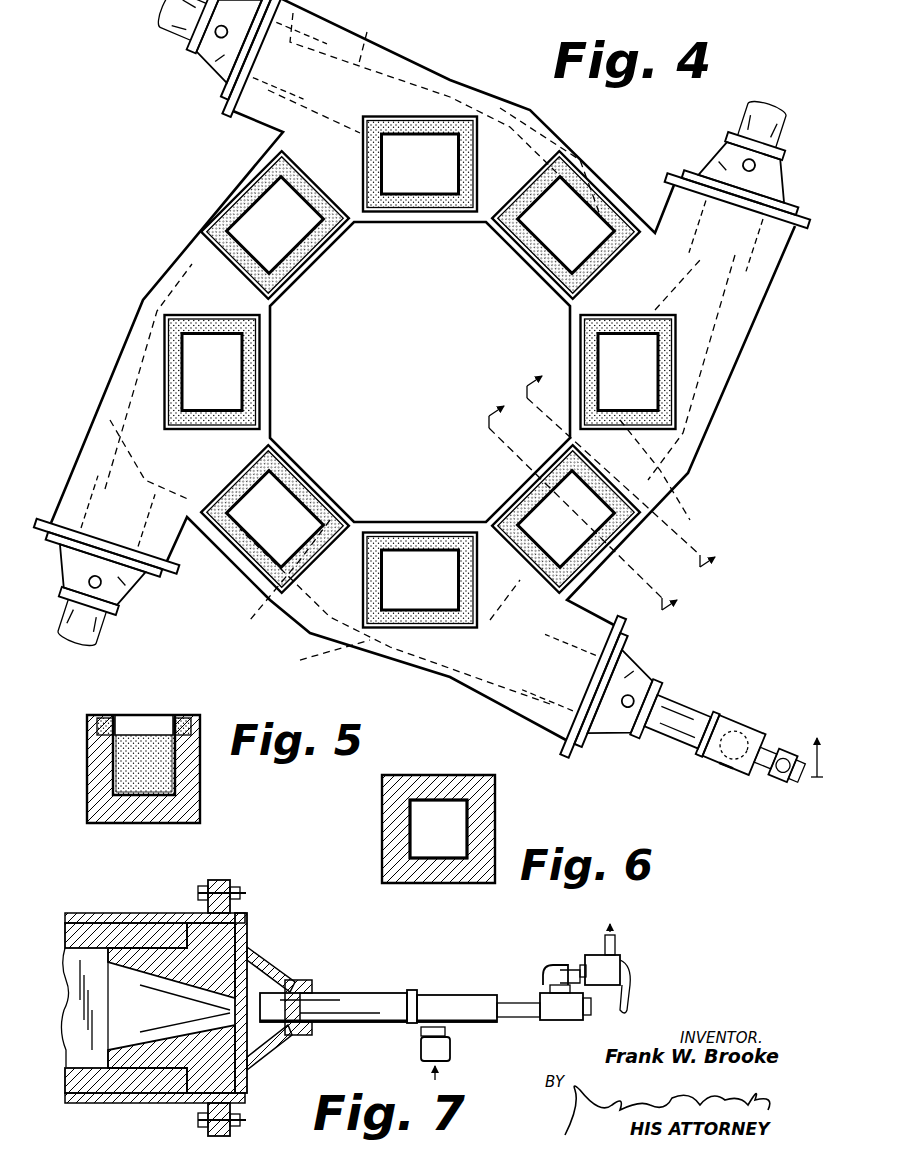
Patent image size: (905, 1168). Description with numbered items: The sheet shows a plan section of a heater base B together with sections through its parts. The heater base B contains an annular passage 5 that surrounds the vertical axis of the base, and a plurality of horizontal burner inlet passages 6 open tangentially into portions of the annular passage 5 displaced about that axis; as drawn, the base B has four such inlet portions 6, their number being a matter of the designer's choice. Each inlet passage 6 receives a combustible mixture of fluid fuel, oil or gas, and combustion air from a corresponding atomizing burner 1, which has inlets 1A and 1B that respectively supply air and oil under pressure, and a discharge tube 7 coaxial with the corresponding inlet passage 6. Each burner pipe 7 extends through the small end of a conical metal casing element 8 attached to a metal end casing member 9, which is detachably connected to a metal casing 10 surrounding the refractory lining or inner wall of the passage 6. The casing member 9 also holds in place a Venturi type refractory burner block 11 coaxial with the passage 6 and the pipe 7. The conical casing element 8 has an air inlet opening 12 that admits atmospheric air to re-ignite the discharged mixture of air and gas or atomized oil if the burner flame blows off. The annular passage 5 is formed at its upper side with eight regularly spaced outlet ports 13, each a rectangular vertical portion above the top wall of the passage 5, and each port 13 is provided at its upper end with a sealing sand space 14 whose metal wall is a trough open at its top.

In FIG. 4, the heater base B is at (245, 192).
In FIG. 4, the annular passage 5 is at (240, 364).
In FIG. 5, the annular passage 5 is at (173, 766).
In FIG. 6, the annular passage 5 is at (458, 829).
In FIG. 4, the burner inlet passage 6 is at (372, 42).
In FIG. 7, the burner inlet passage 6 is at (70, 990).
In FIG. 4, the discharge tube 7 is at (176, 38).
In FIG. 7, the discharge tube 7 is at (376, 997).
In FIG. 4, the conical metal casing element 8 is at (723, 144).
In FIG. 7, the conical metal casing element 8 is at (290, 980).
In FIG. 4, the metal end casing member 9 is at (221, 110).
In FIG. 7, the metal end casing member 9 is at (245, 921).
In FIG. 7, the metal casing 10 is at (107, 912).
In FIG. 7, the Venturi type refractory burner block 11 is at (196, 940).
In FIG. 4, the air inlet opening 12 is at (216, 38).
In FIG. 7, the air inlet opening 12 is at (272, 963).
In FIG. 4, the outlet port 13 is at (455, 148).
In FIG. 5, the outlet port 13 is at (143, 728).
In FIG. 4, the sealing sand space 14 is at (437, 113).
In FIG. 5, the sealing sand space 14 is at (104, 713).
In FIG. 4, the burner 1 is at (748, 723).
In FIG. 7, the burner 1 is at (462, 993).
In FIG. 4, the air inlet 1A is at (737, 757).
In FIG. 7, the air inlet 1A is at (451, 1052).
In FIG. 4, the oil inlet 1B is at (786, 777).
In FIG. 7, the oil inlet 1B is at (616, 943).